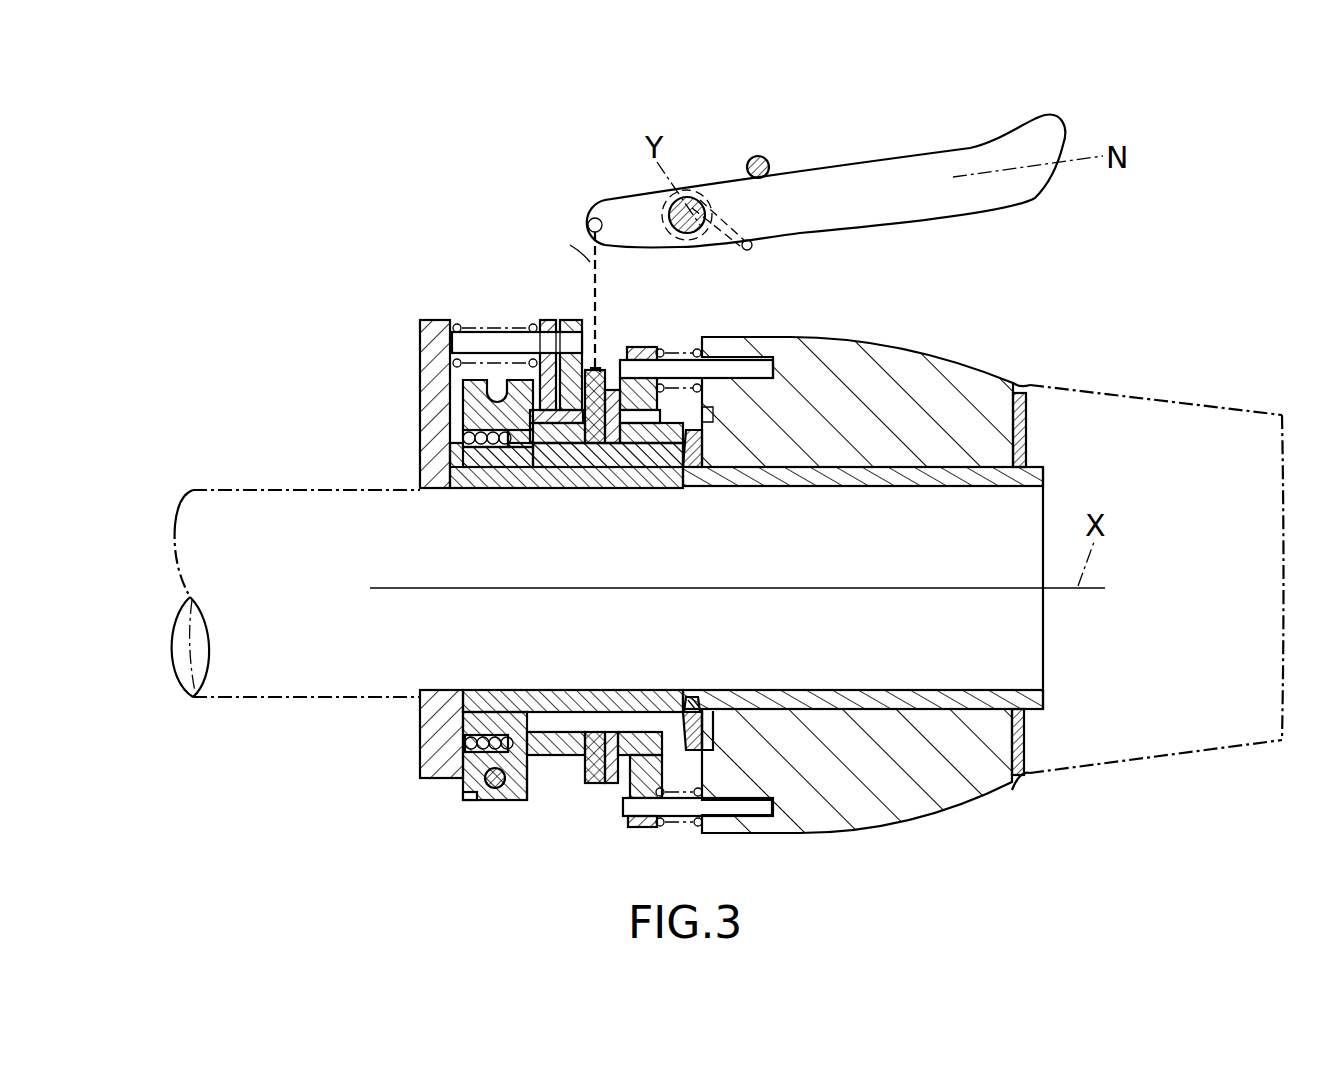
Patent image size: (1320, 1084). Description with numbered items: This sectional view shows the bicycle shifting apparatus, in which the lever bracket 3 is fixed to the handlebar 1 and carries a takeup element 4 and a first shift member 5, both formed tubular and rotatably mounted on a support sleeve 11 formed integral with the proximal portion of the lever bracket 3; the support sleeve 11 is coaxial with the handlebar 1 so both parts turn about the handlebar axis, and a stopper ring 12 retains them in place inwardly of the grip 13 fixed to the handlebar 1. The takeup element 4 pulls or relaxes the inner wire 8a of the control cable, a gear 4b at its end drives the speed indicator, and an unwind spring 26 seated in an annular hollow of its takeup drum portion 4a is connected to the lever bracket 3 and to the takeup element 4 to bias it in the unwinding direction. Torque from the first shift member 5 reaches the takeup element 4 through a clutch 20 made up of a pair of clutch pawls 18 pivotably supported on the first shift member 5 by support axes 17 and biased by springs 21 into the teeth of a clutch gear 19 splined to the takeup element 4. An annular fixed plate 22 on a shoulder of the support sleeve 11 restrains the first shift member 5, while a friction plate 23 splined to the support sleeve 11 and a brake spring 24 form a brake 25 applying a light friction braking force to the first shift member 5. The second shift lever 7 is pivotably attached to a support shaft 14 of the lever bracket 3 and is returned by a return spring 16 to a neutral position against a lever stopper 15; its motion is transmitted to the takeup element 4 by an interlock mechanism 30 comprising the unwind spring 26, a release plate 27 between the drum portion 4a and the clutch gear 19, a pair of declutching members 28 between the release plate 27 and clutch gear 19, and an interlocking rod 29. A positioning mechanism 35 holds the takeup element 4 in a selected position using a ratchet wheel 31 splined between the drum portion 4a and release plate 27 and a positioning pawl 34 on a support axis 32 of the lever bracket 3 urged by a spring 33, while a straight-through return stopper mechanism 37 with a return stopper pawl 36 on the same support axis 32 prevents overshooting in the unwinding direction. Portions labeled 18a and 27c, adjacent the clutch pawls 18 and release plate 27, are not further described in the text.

The bicycle handlebar 1 is at (240, 490).
The lever bracket 3 is at (420, 402).
The takeup element 4 is at (477, 710).
The takeup drum portion 4a is at (510, 800).
The gear 4b is at (463, 800).
The first shift member 5 is at (935, 355).
The second shift lever 7 is at (1023, 183).
The inner wire 8a is at (480, 778).
The support sleeve 11 is at (883, 480).
The stopper ring 12 is at (1030, 452).
The grip 13 is at (1145, 405).
The support shaft 14 is at (705, 200).
The lever stopper 15 is at (770, 160).
The return spring 16 is at (752, 248).
The support axes 17 is at (680, 810).
The clutch pawls 18 is at (662, 347).
The plate block 18a is at (617, 360).
The clutch gear 19 is at (640, 455).
The clutch 20 is at (648, 455).
The spring 21 is at (670, 828).
The annular fixed plate 22 is at (680, 697).
The friction plate 23 is at (723, 730).
The brake spring 24 is at (697, 712).
The brake 25 is at (790, 642).
The unwind spring 26 is at (462, 447).
The release plate 27 is at (600, 455).
The recess 27c is at (505, 382).
The declutching members 28 is at (608, 455).
The interlocking rod 29 is at (590, 258).
The interlock mechanism 30 is at (509, 220).
The ratchet wheel 31 is at (535, 455).
The support axis 32 is at (482, 340).
The spring 33 is at (455, 327).
The positioning pawl 34 is at (585, 302).
The positioning mechanism 35 is at (565, 455).
The return stopper pawl 36 is at (545, 318).
The straight-through return stopper mechanism 37 is at (510, 455).